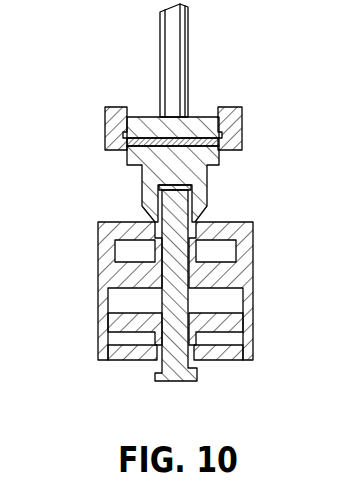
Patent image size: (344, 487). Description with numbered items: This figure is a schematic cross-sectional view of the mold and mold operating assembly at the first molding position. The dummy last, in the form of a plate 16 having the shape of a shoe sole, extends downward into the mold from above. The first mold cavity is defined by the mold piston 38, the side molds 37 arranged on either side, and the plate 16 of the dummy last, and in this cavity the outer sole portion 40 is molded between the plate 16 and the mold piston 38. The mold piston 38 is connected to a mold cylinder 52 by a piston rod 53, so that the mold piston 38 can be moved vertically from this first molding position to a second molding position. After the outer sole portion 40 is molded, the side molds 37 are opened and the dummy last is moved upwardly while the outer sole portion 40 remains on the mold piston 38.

The plate 16 is at (200, 117).
The side molds 37 is at (106, 133).
The mold piston 38 is at (207, 192).
The outer sole portion 40 is at (146, 117).
The mold cylinder 52 is at (253, 298).
The piston rod 53 is at (162, 303).